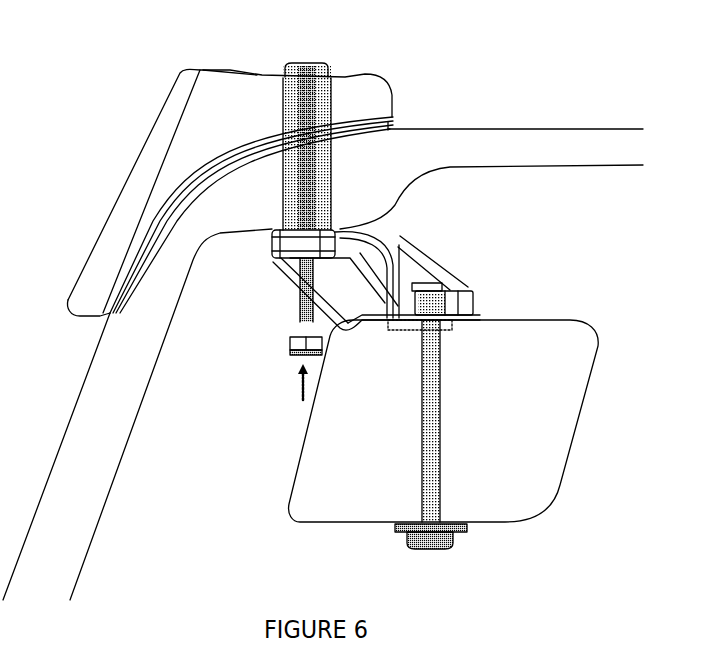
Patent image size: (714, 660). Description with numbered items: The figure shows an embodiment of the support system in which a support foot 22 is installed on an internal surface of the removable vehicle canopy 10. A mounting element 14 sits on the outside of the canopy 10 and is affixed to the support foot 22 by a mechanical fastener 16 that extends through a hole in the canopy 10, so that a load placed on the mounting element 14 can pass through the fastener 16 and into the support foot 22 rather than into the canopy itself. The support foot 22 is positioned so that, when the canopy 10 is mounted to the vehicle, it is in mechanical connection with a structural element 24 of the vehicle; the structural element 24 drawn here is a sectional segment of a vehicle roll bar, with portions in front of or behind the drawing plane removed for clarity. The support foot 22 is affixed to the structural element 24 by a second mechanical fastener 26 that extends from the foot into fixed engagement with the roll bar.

The removable canopy 10 is at (522, 140).
The mounting element 14 is at (155, 150).
The mechanical fastener 16 is at (334, 65).
The support foot 22 is at (414, 272).
The structural element 24 is at (543, 334).
The mechanical fastener 26 is at (451, 541).